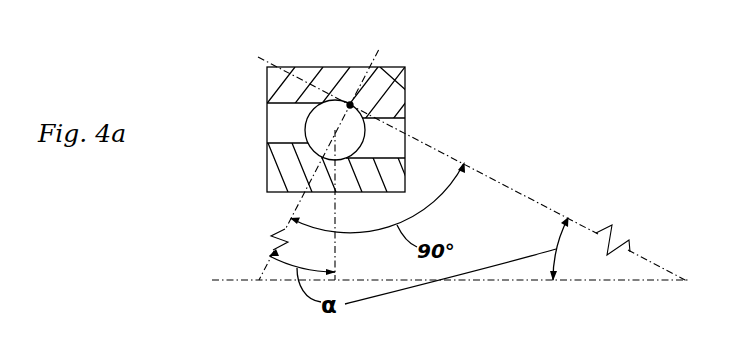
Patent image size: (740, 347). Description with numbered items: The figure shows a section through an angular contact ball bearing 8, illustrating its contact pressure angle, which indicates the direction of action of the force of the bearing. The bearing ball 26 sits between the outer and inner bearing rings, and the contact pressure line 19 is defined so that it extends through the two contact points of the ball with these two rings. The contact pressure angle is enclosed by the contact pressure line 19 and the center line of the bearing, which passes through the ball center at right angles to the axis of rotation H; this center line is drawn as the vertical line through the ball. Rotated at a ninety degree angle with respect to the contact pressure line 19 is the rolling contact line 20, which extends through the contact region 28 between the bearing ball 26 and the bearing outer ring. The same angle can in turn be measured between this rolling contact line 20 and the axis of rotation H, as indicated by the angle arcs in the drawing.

The angular contact ball bearing 8 is at (262, 39).
The bearing ball 26 is at (316, 135).
The contact region 28 is at (350, 105).
The contact pressure line 19 is at (301, 202).
The rolling contact line 20 is at (523, 195).
The axis of rotation H is at (214, 280).